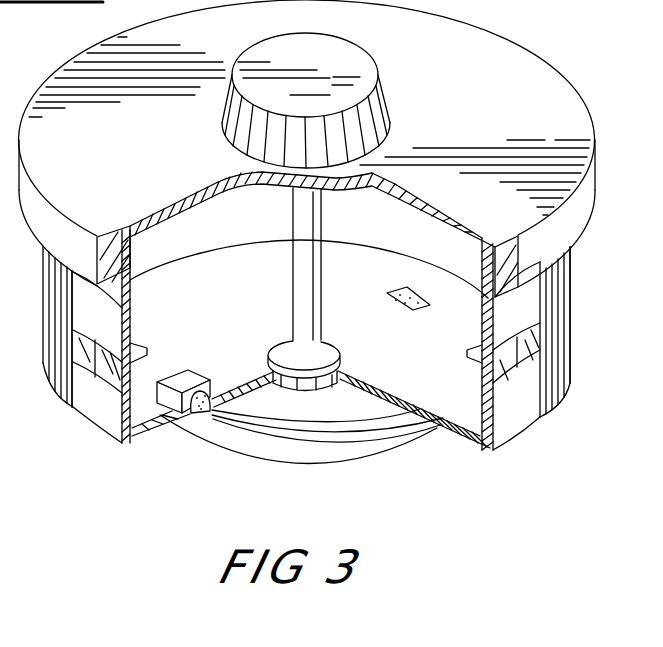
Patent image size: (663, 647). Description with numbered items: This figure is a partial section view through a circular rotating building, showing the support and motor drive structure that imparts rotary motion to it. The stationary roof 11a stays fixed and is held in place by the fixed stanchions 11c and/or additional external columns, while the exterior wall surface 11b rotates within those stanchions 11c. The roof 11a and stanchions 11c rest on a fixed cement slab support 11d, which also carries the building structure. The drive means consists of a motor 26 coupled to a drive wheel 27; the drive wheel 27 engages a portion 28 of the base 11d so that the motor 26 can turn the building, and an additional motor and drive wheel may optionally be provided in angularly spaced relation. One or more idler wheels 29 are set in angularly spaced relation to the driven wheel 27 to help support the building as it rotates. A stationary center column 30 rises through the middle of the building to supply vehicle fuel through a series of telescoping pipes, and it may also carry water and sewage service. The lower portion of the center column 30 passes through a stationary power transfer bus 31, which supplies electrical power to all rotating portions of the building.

The roof 11a is at (483, 130).
The exterior wall surface 11b is at (108, 329).
The stanchions 11c is at (560, 363).
The cement slab support 11d is at (300, 461).
The motor 26 is at (186, 372).
The drive wheel 27 is at (212, 405).
The portion of the base 28 is at (363, 426).
The idler wheels 29 is at (413, 289).
The stationary center column 30 is at (320, 214).
The stationary power transfer bus 31 is at (341, 354).